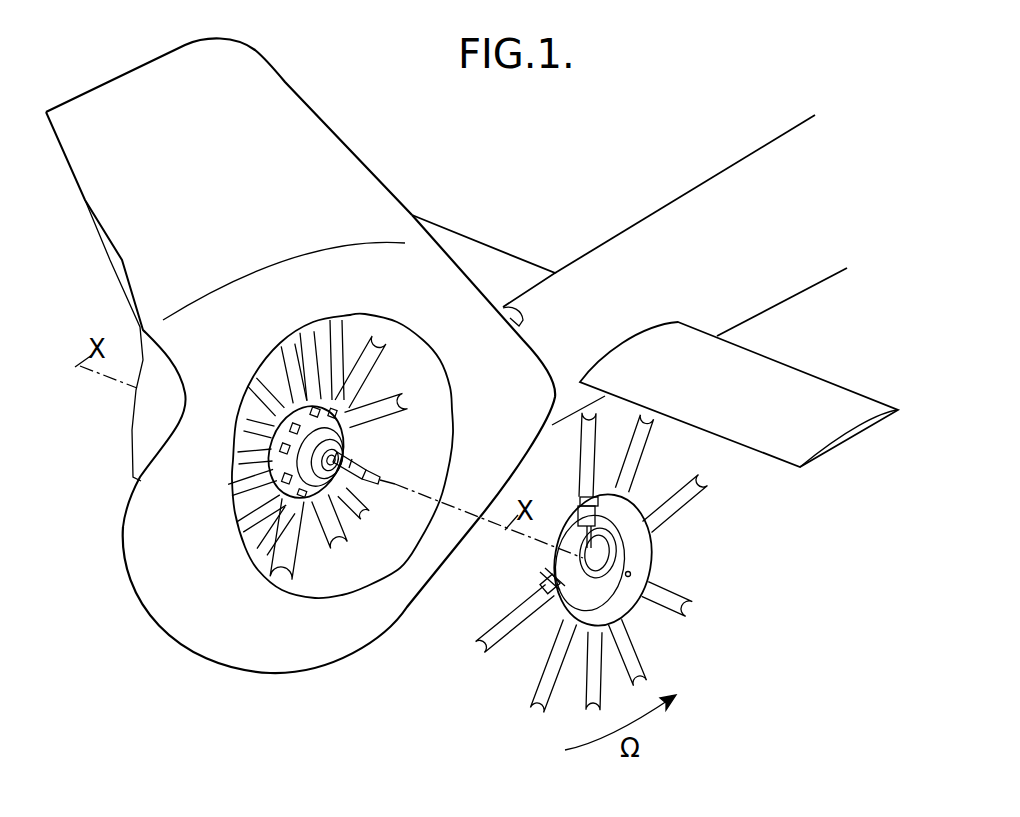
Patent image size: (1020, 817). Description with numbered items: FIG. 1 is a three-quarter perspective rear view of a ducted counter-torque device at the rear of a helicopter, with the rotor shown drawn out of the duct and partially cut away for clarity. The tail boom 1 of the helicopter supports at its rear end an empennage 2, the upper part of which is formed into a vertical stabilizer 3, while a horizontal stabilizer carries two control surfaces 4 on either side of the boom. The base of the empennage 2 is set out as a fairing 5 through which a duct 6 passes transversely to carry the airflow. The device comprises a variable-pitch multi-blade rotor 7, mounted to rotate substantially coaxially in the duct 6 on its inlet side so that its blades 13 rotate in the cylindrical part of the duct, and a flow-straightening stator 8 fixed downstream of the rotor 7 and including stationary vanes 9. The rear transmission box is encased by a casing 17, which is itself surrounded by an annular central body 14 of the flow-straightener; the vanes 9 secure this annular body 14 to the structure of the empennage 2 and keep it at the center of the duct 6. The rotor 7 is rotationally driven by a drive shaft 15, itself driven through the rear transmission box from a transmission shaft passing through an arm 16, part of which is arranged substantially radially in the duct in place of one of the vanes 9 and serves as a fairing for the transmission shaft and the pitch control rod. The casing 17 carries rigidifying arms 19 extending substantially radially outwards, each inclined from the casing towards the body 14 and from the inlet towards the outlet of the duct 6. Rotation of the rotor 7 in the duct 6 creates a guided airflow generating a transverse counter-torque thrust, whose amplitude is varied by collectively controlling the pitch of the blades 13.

The tail boom 1 is at (733, 207).
The empennage 2 is at (402, 200).
The vertical stabilizer 3 is at (237, 83).
The control surfaces 4 is at (498, 270).
The fairing 5 is at (182, 520).
The duct 6 is at (388, 437).
The rotor 7 is at (657, 560).
The flow-straightening stator 8 is at (308, 548).
The stationary vanes 9 is at (253, 533).
The blades 13 is at (630, 653).
The annular central body 14 is at (278, 422).
The drive shaft 15 is at (355, 473).
The arm 16 is at (381, 336).
The casing 17 is at (300, 402).
The rigidifying arms 19 is at (287, 463).